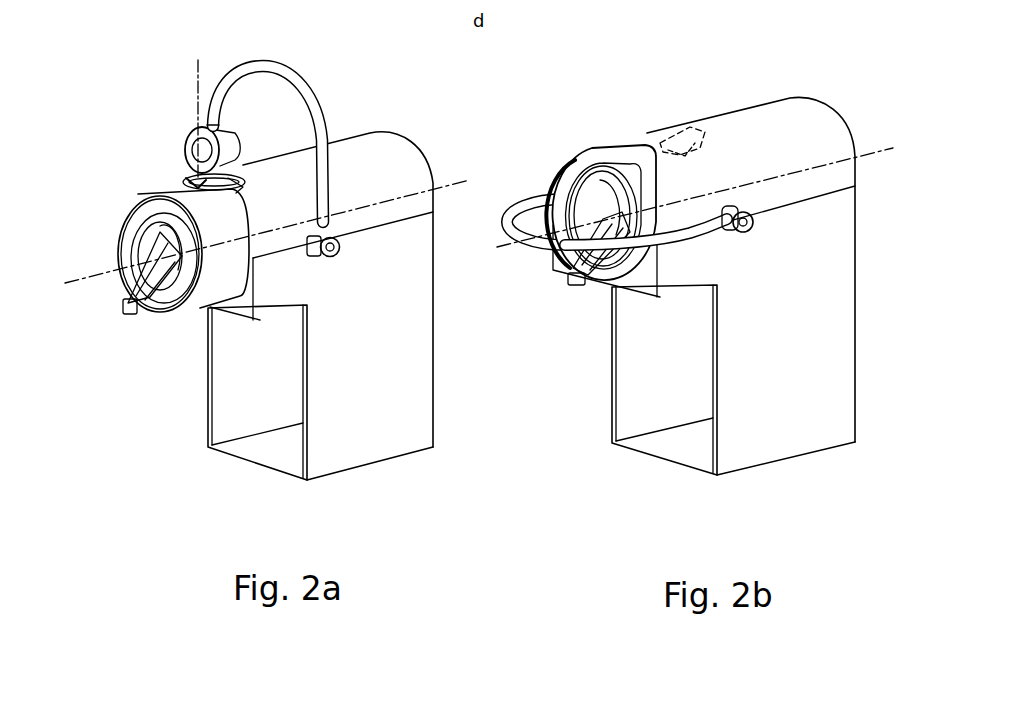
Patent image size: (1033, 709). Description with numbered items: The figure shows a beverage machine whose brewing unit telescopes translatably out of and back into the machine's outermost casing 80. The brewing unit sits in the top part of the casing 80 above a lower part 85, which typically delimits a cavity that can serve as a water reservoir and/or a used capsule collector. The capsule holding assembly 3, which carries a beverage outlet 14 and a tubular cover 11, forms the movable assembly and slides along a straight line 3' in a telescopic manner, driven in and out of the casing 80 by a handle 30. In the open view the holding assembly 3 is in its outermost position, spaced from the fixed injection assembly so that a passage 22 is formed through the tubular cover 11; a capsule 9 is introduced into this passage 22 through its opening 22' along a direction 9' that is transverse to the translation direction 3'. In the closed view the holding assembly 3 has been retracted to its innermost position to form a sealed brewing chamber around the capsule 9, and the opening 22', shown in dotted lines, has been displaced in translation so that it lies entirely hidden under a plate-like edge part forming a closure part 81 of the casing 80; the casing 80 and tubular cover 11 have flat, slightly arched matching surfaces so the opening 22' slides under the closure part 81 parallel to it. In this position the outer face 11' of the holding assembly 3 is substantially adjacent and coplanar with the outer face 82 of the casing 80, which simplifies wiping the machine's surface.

In FIG. 2A, the holding assembly 3 is at (149, 246).
In FIG. 2A, the straight line 3' is at (278, 207).
In FIG. 2B, the straight line 3' is at (679, 197).
In FIG. 2A, the capsule 9 is at (191, 130).
In FIG. 2A, the direction of introduction 9' is at (151, 91).
In FIG. 2A, the tubular cover 11 is at (166, 295).
In FIG. 2B, the tubular cover 11 is at (612, 172).
In FIG. 2B, the outer face 11' is at (594, 190).
In FIG. 2A, the beverage outlet 14 is at (125, 318).
In FIG. 2B, the beverage outlet 14 is at (575, 287).
In FIG. 2A, the passage 22 is at (171, 165).
In FIG. 2A, the opening 22' is at (266, 192).
In FIG. 2B, the opening 22' is at (719, 161).
In FIG. 2A, the handle 30 is at (227, 83).
In FIG. 2A, the casing 80 is at (367, 163).
In FIG. 2B, the casing 80 is at (790, 133).
In FIG. 2B, the closure part 81 is at (678, 138).
In FIG. 2B, the outer face 82 is at (652, 278).
In FIG. 2A, the lower part 85 is at (238, 385).
In FIG. 2B, the lower part 85 is at (640, 393).